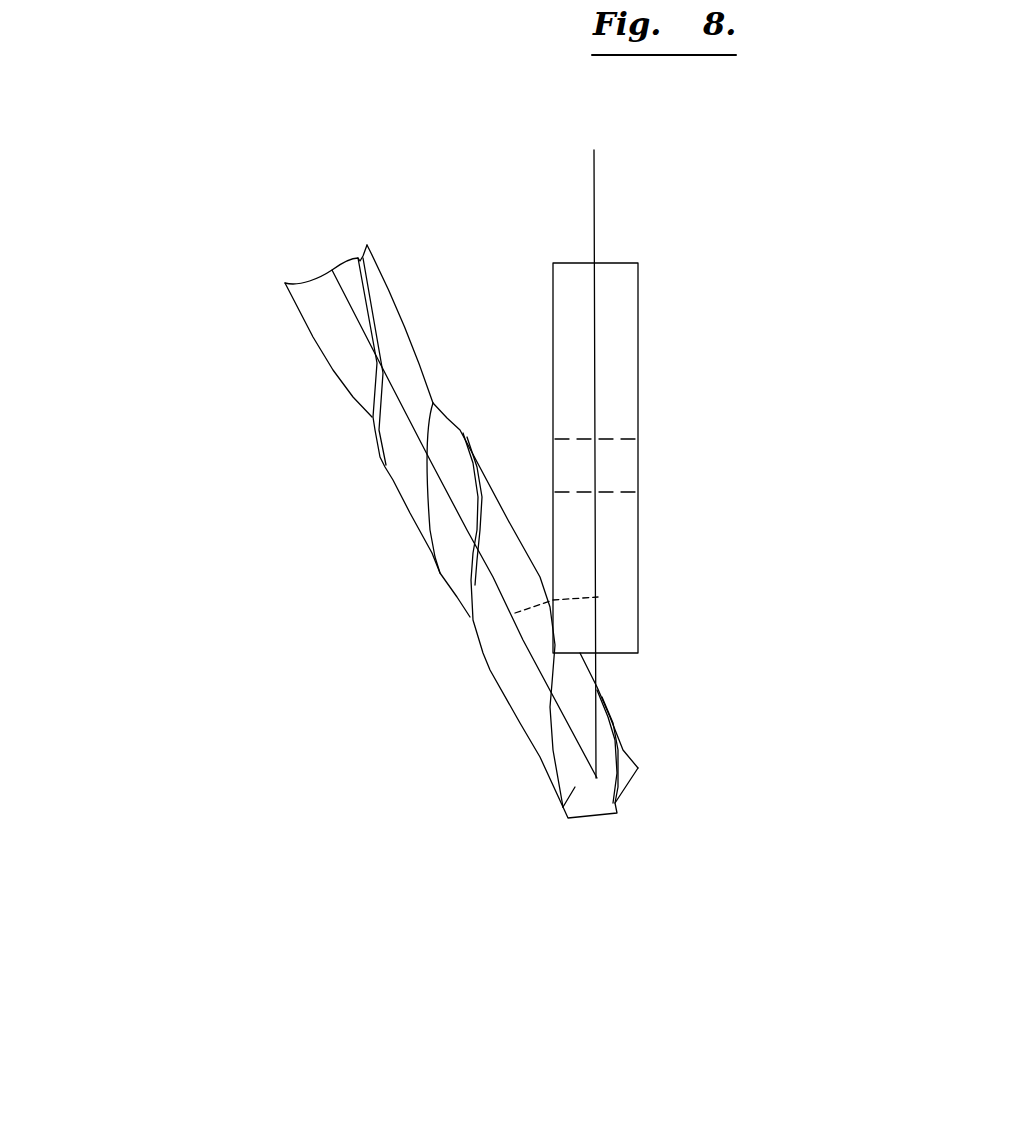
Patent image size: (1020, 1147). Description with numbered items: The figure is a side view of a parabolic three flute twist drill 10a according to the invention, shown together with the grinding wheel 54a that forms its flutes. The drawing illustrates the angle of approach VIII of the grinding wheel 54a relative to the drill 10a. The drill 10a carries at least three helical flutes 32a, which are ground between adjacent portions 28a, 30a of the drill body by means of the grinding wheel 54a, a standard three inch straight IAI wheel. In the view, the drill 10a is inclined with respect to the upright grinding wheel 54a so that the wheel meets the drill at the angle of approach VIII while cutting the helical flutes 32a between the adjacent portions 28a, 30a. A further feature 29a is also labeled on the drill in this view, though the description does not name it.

The drill 10a is at (445, 567).
The adjacent portion 28a is at (633, 773).
The cutting edge 29a is at (537, 690).
The adjacent portion 30a is at (403, 457).
The helical flute 32a is at (445, 442).
The grinding wheel 54a is at (620, 533).
The angle of approach VIII is at (578, 625).